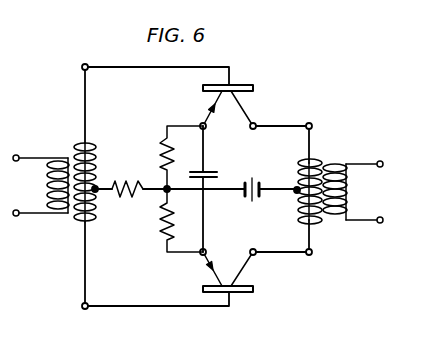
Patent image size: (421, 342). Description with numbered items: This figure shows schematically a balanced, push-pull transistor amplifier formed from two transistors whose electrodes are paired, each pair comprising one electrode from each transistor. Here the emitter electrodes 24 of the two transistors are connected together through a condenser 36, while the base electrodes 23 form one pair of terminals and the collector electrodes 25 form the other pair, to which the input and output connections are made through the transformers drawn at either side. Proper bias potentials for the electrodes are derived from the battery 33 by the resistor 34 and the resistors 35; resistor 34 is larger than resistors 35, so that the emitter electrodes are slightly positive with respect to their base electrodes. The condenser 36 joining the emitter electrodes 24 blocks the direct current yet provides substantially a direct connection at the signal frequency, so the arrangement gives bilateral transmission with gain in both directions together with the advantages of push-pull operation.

The base electrodes 23 is at (238, 86).
The emitter electrodes 24 is at (208, 107).
The collector electrodes 25 is at (249, 118).
The battery 33 is at (253, 177).
The resistor 34 is at (121, 182).
The resistors 35 is at (163, 140).
The condenser 36 is at (210, 171).